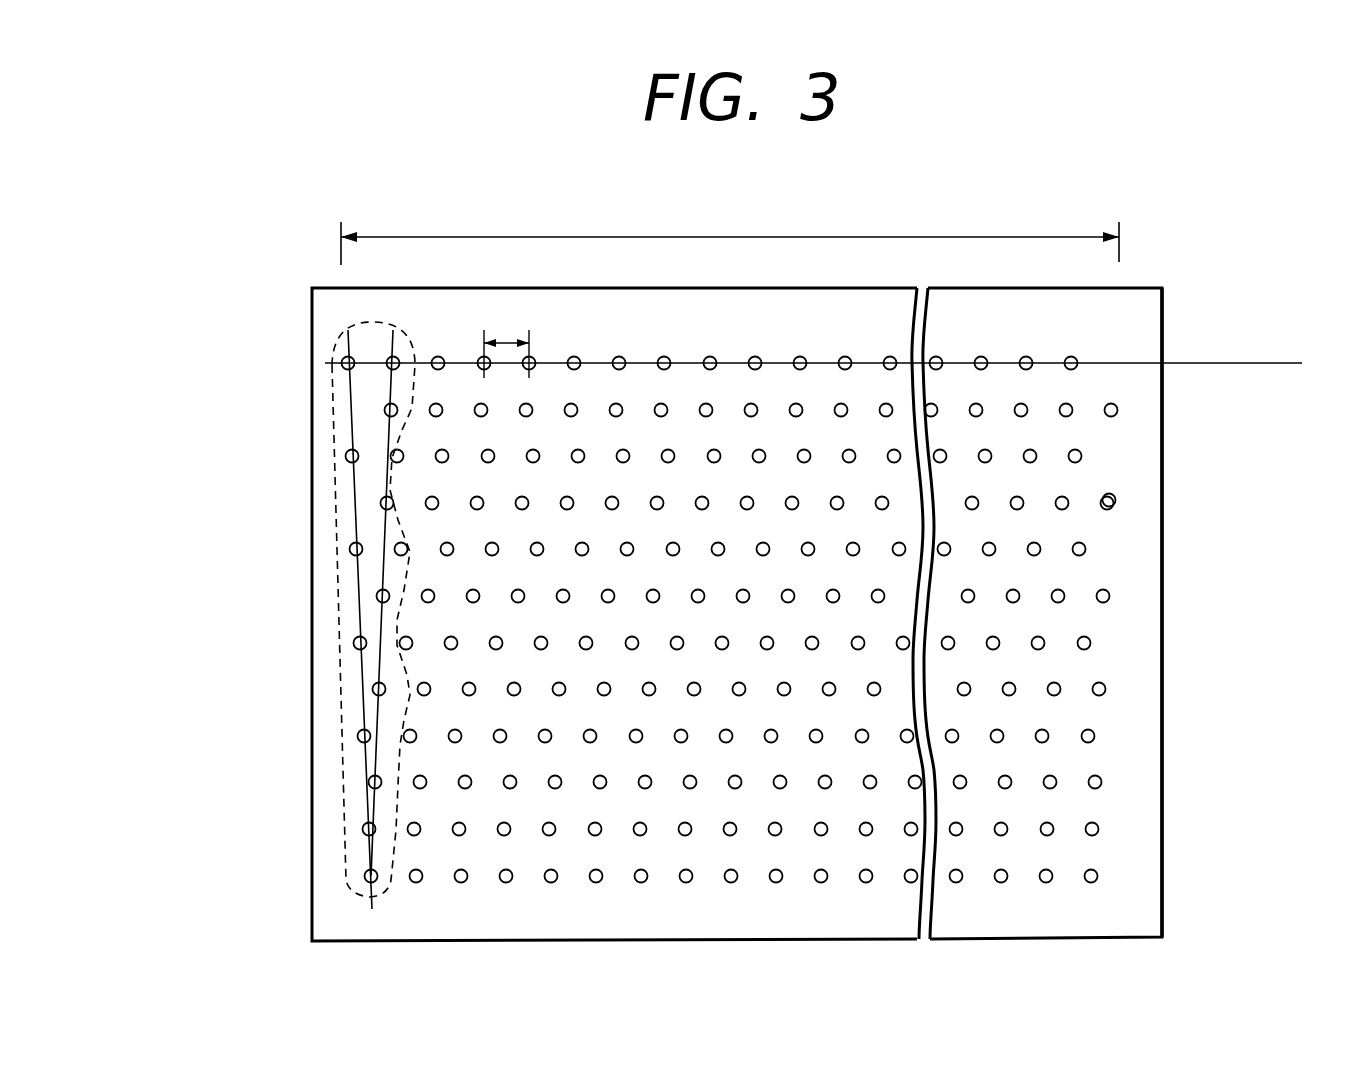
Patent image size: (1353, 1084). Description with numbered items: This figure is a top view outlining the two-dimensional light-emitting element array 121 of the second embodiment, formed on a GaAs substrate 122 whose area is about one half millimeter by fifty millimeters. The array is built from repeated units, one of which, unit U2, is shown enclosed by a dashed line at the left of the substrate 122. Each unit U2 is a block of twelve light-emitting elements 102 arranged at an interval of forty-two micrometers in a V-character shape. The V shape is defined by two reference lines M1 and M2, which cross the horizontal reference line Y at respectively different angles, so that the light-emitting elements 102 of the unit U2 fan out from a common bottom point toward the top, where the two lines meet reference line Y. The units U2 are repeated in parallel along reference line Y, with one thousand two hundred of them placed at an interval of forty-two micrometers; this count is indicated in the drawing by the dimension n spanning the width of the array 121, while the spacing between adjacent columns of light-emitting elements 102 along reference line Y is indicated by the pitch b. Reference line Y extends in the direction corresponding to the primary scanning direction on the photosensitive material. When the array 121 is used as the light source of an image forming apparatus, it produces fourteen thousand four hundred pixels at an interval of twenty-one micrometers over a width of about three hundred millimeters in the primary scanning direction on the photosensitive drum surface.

The light-emitting element 102 is at (1116, 500).
The two-dimensional light-emitting element array 121 is at (1138, 640).
The GaAs substrate 122 is at (1145, 783).
The unit U2 is at (343, 773).
The reference line M1 is at (352, 435).
The reference line M2 is at (387, 523).
The reference line Y is at (834, 327).
The number of dots n=1200 n is at (730, 232).
The dot pitch b is at (506, 344).